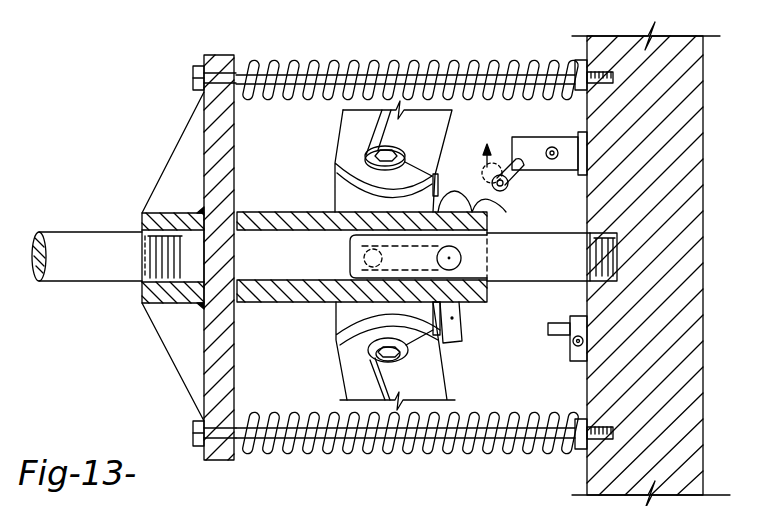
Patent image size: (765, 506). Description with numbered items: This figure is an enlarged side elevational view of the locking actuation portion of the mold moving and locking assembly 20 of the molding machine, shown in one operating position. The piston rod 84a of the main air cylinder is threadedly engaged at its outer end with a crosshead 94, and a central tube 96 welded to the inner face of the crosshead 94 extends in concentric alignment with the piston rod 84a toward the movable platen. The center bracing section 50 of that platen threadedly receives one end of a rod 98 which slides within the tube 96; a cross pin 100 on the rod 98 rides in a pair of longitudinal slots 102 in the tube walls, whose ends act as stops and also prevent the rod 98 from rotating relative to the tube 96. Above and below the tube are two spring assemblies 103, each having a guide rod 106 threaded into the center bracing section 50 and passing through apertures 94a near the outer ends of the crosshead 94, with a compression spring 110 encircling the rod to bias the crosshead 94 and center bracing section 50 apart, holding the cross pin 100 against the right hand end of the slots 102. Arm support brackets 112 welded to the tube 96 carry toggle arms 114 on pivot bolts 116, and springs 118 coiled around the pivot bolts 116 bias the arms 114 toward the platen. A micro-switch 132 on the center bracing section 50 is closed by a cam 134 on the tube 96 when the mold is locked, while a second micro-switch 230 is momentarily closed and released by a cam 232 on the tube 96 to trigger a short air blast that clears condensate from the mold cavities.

The mold moving and locking assembly 20 is at (156, 364).
The center bracing section 50 is at (633, 446).
The piston rod 84a is at (118, 183).
The crosshead 94 is at (146, 312).
The apertures 94a is at (200, 90).
The central tube 96 is at (266, 303).
The rod 98 is at (334, 303).
The cross pin 100 is at (462, 258).
The longitudinal slots 102 is at (348, 255).
The spring assemblies 103 is at (343, 60).
The guide rod 106 is at (428, 62).
The compression springs 110 is at (511, 60).
The arm support brackets 112 is at (333, 180).
The toggle arms 114 is at (445, 122).
The pivot bolts 116 is at (437, 173).
The springs 118 is at (347, 119).
The micro-switch 132 is at (572, 358).
The cam 134 is at (456, 318).
The micro-switch 230 is at (508, 185).
The cam 232 is at (506, 207).